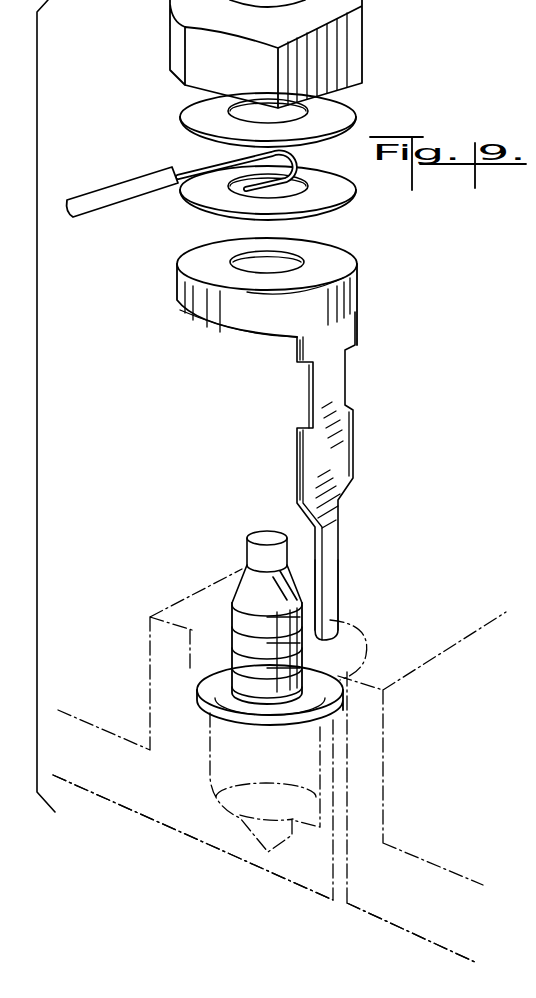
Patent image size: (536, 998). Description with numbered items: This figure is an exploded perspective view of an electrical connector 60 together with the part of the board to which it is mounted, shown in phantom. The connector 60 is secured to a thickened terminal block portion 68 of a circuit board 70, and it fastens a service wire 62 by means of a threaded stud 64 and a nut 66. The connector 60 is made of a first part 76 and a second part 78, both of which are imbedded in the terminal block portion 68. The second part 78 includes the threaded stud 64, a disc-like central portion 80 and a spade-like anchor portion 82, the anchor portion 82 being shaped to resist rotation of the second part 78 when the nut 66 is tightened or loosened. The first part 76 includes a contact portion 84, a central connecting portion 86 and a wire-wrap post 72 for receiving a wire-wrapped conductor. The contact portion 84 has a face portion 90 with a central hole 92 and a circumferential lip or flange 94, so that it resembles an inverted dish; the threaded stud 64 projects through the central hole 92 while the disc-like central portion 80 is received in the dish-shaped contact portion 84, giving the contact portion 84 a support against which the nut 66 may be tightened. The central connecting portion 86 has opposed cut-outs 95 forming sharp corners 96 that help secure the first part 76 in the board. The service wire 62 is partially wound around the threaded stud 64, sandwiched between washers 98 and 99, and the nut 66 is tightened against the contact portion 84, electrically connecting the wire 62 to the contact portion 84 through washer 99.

The electrical connector 60 is at (384, 121).
The service wire 62 is at (120, 187).
The threaded stud 64 is at (232, 602).
The nut 66 is at (353, 48).
The terminal block portion 68 is at (487, 757).
The circuit board 70 is at (462, 913).
The wire-wrap post 72 is at (330, 573).
The first part 76 is at (281, 438).
The second part 78 is at (205, 738).
The disc-like central portion 80 is at (208, 686).
The spade-like anchor portion 82 is at (225, 758).
The contact portion 84 is at (248, 317).
The central connecting portion 86 is at (353, 451).
The face portion 90 is at (337, 267).
The central hole 92 is at (233, 253).
The circumferential lip or flange 94 is at (180, 300).
The opposed cut-outs 95 is at (346, 377).
The sharp corners 96 is at (297, 358).
The washer 98 is at (340, 108).
The washer 99 is at (342, 190).